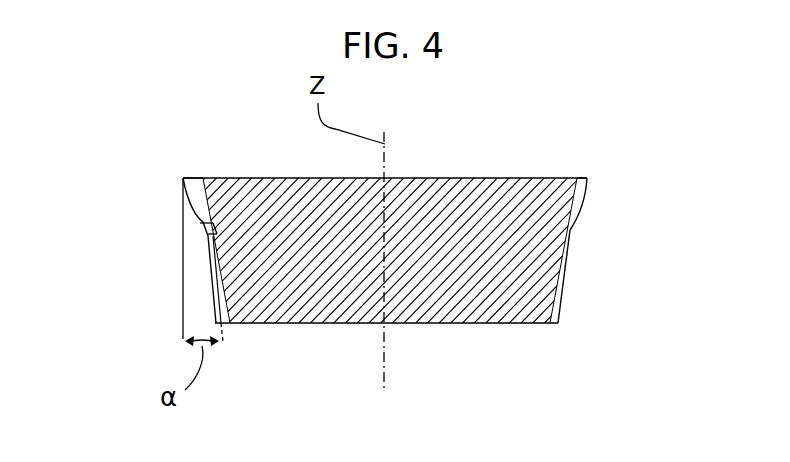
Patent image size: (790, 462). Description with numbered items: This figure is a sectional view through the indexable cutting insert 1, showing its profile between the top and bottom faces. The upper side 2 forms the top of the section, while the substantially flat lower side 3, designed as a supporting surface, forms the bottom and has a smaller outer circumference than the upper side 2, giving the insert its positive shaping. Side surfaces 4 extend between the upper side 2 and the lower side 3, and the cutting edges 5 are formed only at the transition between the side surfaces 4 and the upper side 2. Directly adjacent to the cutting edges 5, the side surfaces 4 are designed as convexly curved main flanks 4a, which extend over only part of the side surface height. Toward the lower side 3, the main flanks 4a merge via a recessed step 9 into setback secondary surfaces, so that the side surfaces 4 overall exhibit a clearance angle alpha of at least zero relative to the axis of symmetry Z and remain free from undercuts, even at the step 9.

The indexable cutting insert 1 is at (105, 176).
The upper side 2 is at (425, 178).
The lower side 3 is at (457, 323).
The side surfaces 4 is at (210, 268).
The main flanks 4a is at (587, 202).
The cutting edges 5 is at (183, 178).
The step 9 is at (208, 236).